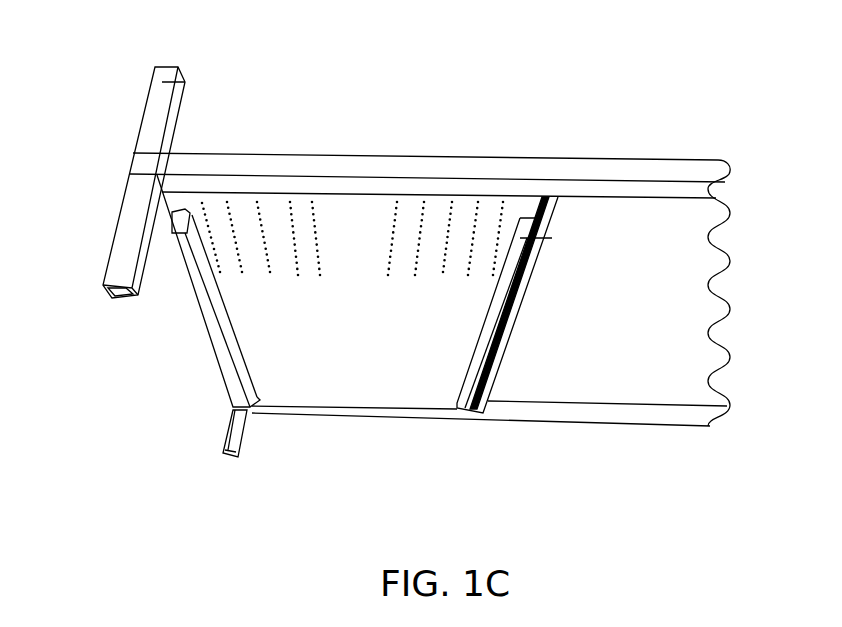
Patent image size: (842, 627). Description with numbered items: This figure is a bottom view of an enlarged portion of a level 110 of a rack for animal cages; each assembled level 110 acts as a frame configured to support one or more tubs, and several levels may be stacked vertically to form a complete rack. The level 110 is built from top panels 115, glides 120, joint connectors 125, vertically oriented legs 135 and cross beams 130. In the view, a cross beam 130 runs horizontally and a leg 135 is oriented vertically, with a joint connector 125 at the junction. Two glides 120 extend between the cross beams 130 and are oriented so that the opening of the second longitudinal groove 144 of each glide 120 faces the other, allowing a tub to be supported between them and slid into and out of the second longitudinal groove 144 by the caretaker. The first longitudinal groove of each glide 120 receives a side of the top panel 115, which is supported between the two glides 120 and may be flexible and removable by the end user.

The level 110 is at (607, 110).
The top panel 115 is at (347, 382).
The glide 120 is at (225, 350).
The joint connector 125 is at (150, 170).
The cross beam 130 is at (415, 158).
The leg 135 is at (165, 89).
The second longitudinal groove 144 is at (190, 212).